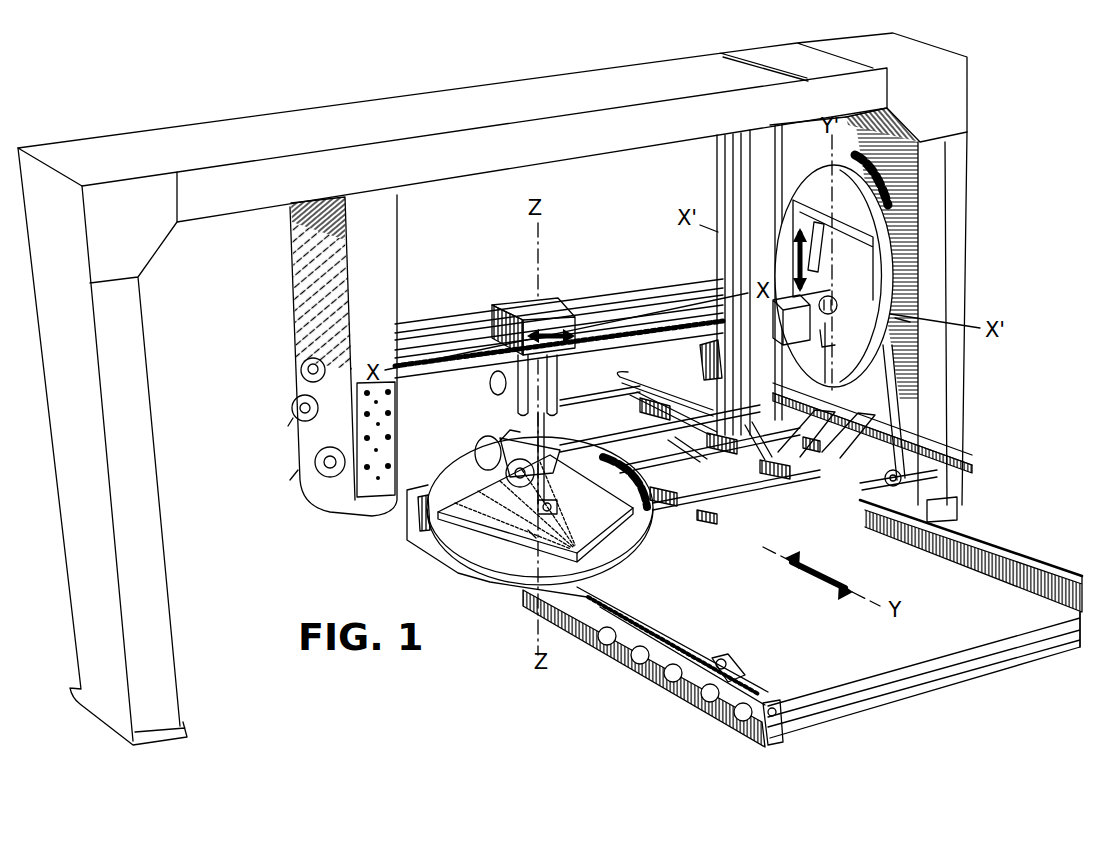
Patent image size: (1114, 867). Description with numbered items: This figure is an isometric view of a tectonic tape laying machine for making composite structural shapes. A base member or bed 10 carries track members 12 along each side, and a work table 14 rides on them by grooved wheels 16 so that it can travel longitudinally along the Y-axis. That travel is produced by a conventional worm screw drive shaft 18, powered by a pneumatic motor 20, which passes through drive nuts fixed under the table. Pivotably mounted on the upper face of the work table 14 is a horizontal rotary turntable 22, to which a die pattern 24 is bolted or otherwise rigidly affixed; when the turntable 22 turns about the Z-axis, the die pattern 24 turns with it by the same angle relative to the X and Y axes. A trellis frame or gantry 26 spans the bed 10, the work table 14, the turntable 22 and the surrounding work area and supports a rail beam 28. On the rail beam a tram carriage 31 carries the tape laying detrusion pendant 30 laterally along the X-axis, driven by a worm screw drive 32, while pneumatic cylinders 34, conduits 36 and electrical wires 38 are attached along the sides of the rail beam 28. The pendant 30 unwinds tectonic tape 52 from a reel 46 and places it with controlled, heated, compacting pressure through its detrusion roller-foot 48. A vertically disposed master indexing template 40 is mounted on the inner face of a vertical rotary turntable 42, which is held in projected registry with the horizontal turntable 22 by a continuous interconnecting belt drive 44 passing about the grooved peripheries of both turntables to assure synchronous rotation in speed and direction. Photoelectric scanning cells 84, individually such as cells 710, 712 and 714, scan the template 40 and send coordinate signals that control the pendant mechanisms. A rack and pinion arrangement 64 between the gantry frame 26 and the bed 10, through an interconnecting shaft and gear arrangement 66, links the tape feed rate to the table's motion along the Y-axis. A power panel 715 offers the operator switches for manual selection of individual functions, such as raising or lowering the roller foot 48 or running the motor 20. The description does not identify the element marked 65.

The base member or bed 10 is at (1005, 535).
The track members 12 is at (748, 696).
The work table 14 is at (803, 539).
The grooved wheels 16 is at (550, 604).
The worm screw drive shaft 18 is at (638, 613).
The pneumatic motor 20 is at (410, 470).
The rotary turntable 22 is at (479, 552).
The die pattern 24 is at (590, 538).
The trellis frame or gantry 26 is at (503, 157).
The rail beam 28 is at (580, 298).
The detrusion pendant 30 is at (566, 400).
The tram carriage 31 is at (510, 305).
The worm screw drive 32 is at (672, 286).
The pneumatic cylinders 34 is at (558, 375).
The conduits 36 is at (458, 380).
The electrical wires 38 is at (446, 342).
The master indexing template 40 is at (897, 282).
The vertically disposed rotary turntable 42 is at (854, 377).
The continuous interconnecting belt drive 44 is at (903, 393).
The reel 46 is at (498, 372).
The detrusion roller-foot 48 is at (560, 505).
The tectonic tape 52 is at (534, 532).
The rack and pinion arrangement 64 is at (777, 368).
The clamp 65 is at (487, 481).
The interconnecting shaft and gear arrangement 66 is at (786, 150).
The photoelectric scanning cells 84 is at (905, 326).
The photoelectric cell 710 is at (838, 302).
The photoelectric cell 712 is at (845, 342).
The photoelectric cell 714 is at (838, 275).
The power panel 715 is at (395, 425).